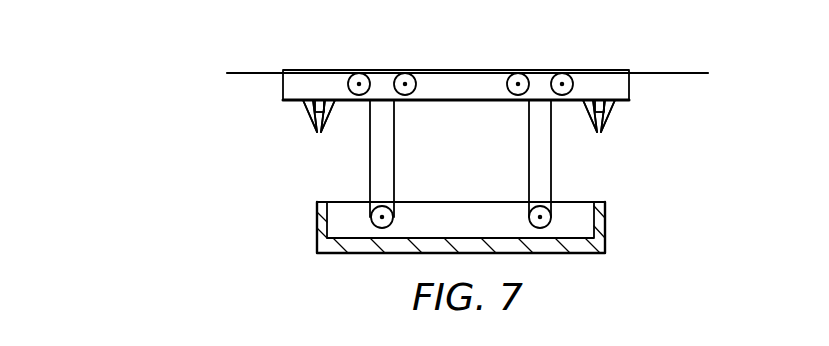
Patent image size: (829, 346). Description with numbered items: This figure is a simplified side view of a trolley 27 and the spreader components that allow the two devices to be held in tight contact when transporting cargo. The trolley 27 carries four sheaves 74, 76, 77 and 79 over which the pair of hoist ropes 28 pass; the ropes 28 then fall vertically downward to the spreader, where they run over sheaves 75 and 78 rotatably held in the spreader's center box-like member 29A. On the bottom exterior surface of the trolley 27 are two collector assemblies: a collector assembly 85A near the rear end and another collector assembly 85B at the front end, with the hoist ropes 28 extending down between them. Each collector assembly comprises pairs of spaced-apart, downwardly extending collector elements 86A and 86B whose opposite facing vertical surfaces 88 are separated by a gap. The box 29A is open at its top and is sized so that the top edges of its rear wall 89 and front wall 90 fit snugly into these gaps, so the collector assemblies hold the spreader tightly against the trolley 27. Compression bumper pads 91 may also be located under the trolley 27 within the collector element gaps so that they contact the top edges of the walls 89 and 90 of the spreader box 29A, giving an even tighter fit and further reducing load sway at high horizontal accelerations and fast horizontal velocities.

The hoist ropes 28 is at (253, 73).
The trolley 27 is at (283, 92).
The sheave 74 is at (358, 74).
The sheave 76 is at (405, 73).
The sheave 77 is at (518, 73).
The sheave 79 is at (563, 74).
The sheave 75 is at (393, 217).
The sheave 78 is at (529, 217).
The collector assembly 85A is at (293, 113).
The collector assembly 85B is at (629, 115).
The collector element 86A is at (311, 125).
The collector element 86B is at (332, 118).
The vertical surfaces 88 is at (322, 131).
The compression bumper pads 91 is at (320, 100).
The front wall 90 is at (474, 220).
The rear wall 89 is at (317, 202).
The box-like member 29A is at (605, 232).